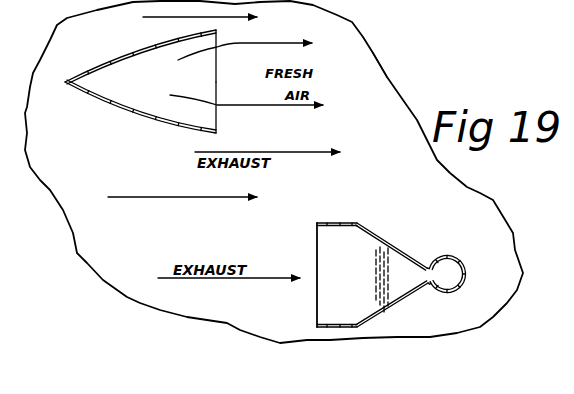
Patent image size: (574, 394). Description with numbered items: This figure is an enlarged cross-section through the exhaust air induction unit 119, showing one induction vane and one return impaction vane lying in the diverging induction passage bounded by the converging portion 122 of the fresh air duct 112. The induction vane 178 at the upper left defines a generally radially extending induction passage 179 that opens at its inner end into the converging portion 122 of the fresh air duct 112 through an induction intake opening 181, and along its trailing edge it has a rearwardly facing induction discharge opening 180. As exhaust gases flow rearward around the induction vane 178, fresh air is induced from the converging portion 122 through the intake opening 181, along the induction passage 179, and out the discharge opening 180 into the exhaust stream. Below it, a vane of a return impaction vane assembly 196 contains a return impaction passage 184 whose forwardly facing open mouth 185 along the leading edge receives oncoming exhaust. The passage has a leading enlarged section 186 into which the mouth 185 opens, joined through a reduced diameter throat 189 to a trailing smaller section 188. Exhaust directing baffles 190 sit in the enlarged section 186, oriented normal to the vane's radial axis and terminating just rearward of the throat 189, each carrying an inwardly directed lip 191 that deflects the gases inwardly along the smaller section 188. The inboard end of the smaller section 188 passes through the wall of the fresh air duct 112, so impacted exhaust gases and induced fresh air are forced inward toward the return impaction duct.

The fresh air duct 112 is at (354, 22).
The converging portion of fresh air duct 122 is at (365, 63).
The exhaust air induction unit 119 is at (155, 82).
The induction vane 178 is at (131, 52).
The induction passage 179 is at (118, 97).
The induction discharge opening 180 is at (219, 38).
The induction intake opening 181 is at (212, 117).
The return impaction vane assembly 196 is at (325, 221).
The open mouth 185 is at (330, 263).
The enlarged section 186 is at (353, 233).
The exhaust directing baffle 190 is at (362, 279).
The reduced diameter throat 189 is at (425, 265).
The smaller section 188 is at (454, 268).
The inwardly directed lip 191 is at (432, 287).
The return impaction passage 184 is at (366, 312).